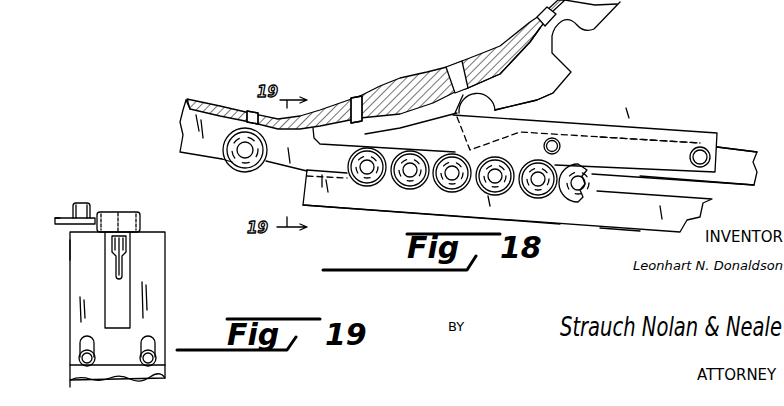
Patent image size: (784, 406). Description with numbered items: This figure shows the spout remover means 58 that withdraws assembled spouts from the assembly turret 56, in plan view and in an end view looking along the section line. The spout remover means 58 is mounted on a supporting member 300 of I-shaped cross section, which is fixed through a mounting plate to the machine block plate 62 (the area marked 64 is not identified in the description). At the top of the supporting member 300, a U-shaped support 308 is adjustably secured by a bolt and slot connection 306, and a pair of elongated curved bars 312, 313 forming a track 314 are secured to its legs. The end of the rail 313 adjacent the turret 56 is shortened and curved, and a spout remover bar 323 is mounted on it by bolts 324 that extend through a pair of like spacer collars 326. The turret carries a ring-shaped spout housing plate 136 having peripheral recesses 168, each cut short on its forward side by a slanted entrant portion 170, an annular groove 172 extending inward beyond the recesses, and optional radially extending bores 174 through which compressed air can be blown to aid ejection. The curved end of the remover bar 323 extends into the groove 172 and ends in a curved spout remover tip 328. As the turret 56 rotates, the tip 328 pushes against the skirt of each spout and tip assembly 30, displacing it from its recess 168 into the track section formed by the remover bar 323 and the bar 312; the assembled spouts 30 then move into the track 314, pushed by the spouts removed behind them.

In FIG. 19, the spout and tip assembly 30 is at (113, 250).
In FIG. 18, the assembly turret 56 is at (196, 102).
In FIG. 18, the spout remover means 58 is at (343, 212).
In FIG. 18, the machine block plate 62 is at (477, 6).
In FIG. 18, the upper portion 64 is at (509, 6).
In FIG. 18, the spout housing plate 136 is at (470, 67).
In FIG. 18, the recess 168 is at (221, 164).
In FIG. 18, the slanted entrant portion 170 is at (281, 171).
In FIG. 18, the annular groove 172 is at (508, 68).
In FIG. 18, the radially extending bore 174 is at (250, 110).
In FIG. 19, the supporting member 300 is at (73, 374).
In FIG. 19, the bolt and slot connection 306 is at (165, 362).
In FIG. 19, the U-shaped support 308 is at (157, 298).
In FIG. 18, the curved bar 312 is at (610, 217).
In FIG. 19, the curved bar 312 is at (152, 238).
In FIG. 18, the curved bar 313 is at (740, 153).
In FIG. 19, the curved bar 313 is at (80, 240).
In FIG. 18, the track 314 is at (720, 194).
In FIG. 18, the spout remover bar 323 is at (673, 128).
In FIG. 19, the spout remover bar 323 is at (60, 218).
In FIG. 18, the bolt 324 is at (693, 153).
In FIG. 19, the bolt 324 is at (83, 203).
In FIG. 19, the spacer collar 326 is at (70, 230).
In FIG. 18, the spout remover tip 328 is at (333, 100).
In FIG. 19, the spout remover tip 328 is at (97, 217).